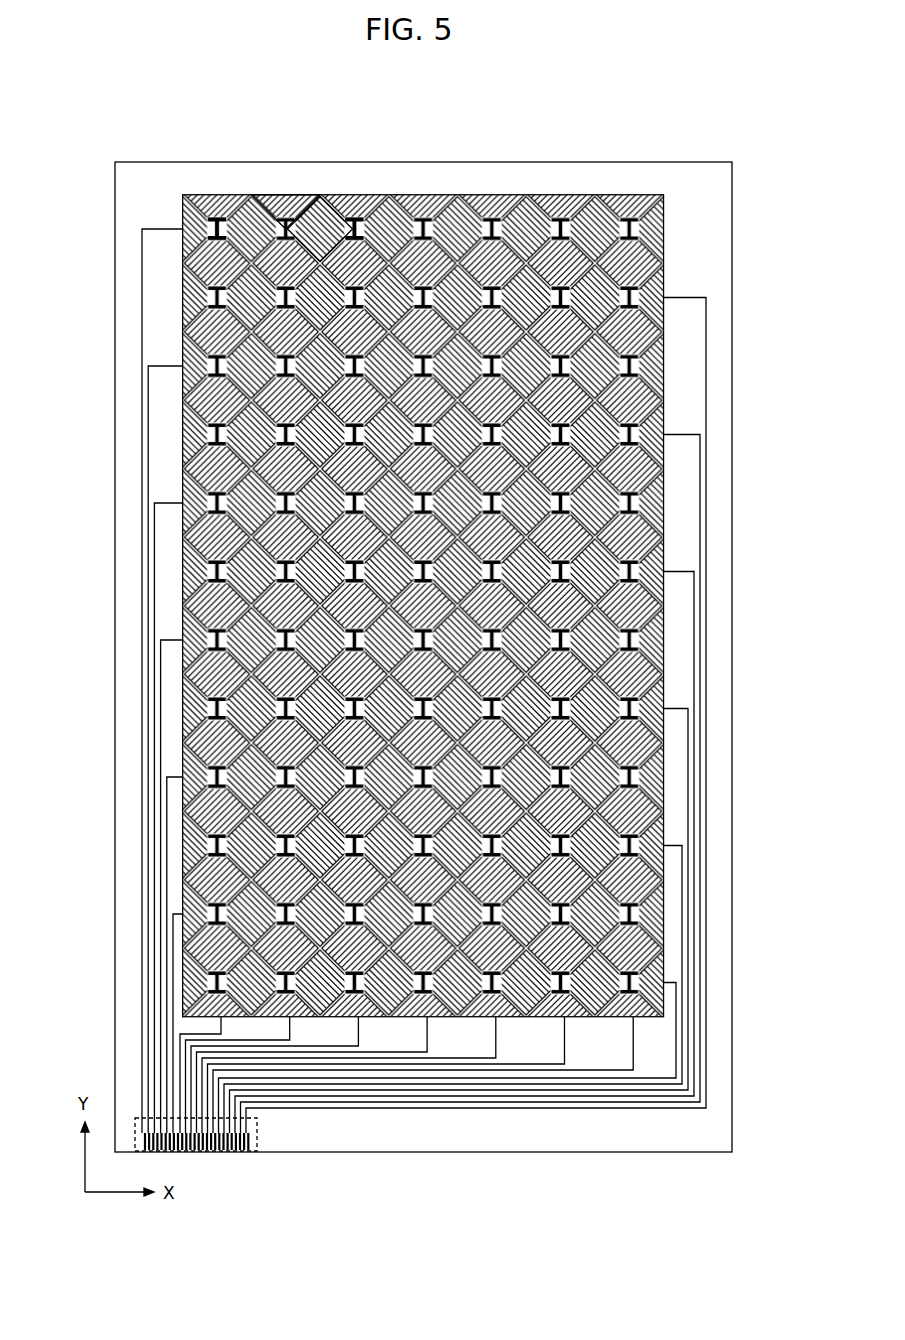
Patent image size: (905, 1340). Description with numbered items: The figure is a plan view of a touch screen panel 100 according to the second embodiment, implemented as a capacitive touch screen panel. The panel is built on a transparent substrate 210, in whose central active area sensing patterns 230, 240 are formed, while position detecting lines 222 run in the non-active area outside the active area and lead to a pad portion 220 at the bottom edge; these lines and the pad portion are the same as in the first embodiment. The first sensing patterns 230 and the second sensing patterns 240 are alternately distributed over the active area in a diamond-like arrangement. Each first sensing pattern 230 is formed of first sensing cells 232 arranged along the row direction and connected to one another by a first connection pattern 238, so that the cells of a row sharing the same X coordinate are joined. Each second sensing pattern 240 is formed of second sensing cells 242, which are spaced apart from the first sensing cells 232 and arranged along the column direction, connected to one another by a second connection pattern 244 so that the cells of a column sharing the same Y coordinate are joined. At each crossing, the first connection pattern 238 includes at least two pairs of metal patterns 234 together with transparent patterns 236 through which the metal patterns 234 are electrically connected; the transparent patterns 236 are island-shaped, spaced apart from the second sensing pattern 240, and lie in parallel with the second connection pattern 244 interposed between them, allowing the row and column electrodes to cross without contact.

The touch screen panel 100 is at (800, 78).
The transparent substrate 210 is at (538, 162).
The pad portion 220 is at (258, 1132).
The position detecting lines 222 is at (142, 273).
The first sensing patterns 230 is at (444, 87).
The first sensing cells 232 is at (323, 220).
The metal patterns 234 is at (347, 217).
The transparent patterns 236 is at (357, 218).
The first connection pattern 238 is at (442, 117).
The second sensing patterns 240 is at (305, 113).
The second sensing cells 242 is at (218, 222).
The second connection pattern 244 is at (278, 200).